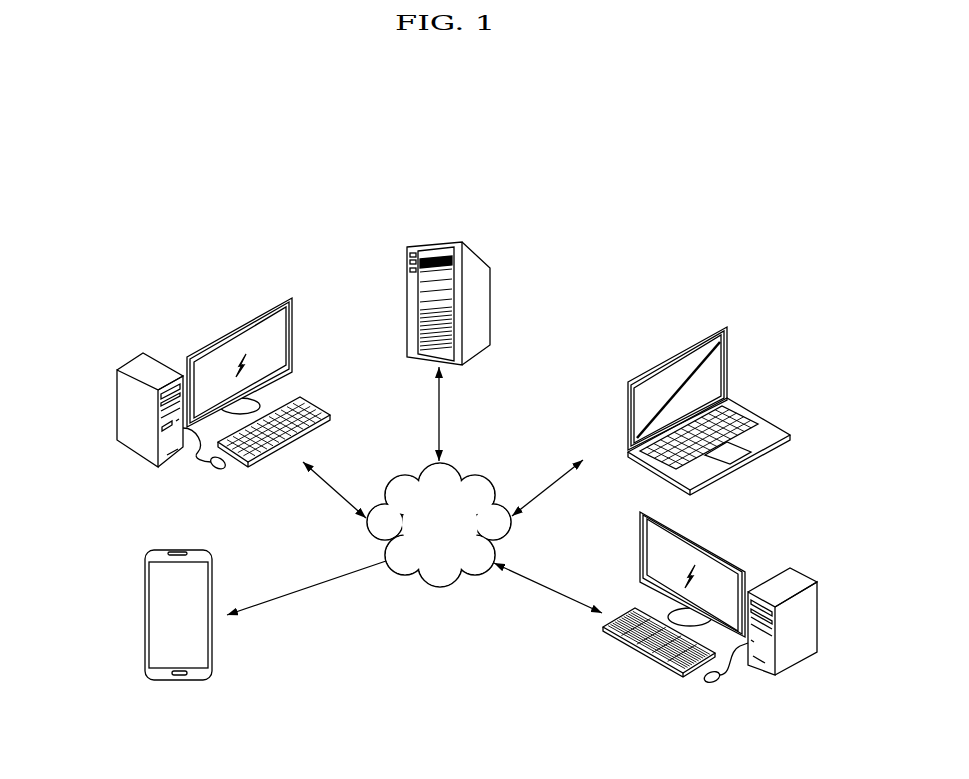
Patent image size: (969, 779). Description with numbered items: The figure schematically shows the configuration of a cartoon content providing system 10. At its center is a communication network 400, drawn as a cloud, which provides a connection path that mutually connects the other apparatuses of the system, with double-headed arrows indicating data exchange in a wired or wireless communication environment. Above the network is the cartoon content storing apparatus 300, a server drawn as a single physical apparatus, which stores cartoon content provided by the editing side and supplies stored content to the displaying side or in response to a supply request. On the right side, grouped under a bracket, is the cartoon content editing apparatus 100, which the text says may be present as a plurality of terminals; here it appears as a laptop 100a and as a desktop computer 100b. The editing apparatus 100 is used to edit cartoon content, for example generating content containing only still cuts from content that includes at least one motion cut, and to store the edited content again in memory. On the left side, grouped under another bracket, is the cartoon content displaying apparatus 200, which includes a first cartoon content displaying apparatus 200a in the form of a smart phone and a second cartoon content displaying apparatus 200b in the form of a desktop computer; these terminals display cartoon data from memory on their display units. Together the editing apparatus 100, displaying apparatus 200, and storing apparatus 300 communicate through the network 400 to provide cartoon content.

The cartoon content providing system 10 is at (700, 246).
The cartoon content editing apparatus 100 is at (833, 385).
The laptop computer 100a is at (728, 363).
The desktop computer 100b is at (817, 620).
The cartoon content displaying apparatus 200 is at (68, 450).
The first cartoon content displaying apparatus 200a is at (145, 612).
The second cartoon content displaying apparatus 200b is at (117, 405).
The cartoon content storing apparatus 300 is at (477, 257).
The communication network 400 is at (487, 479).